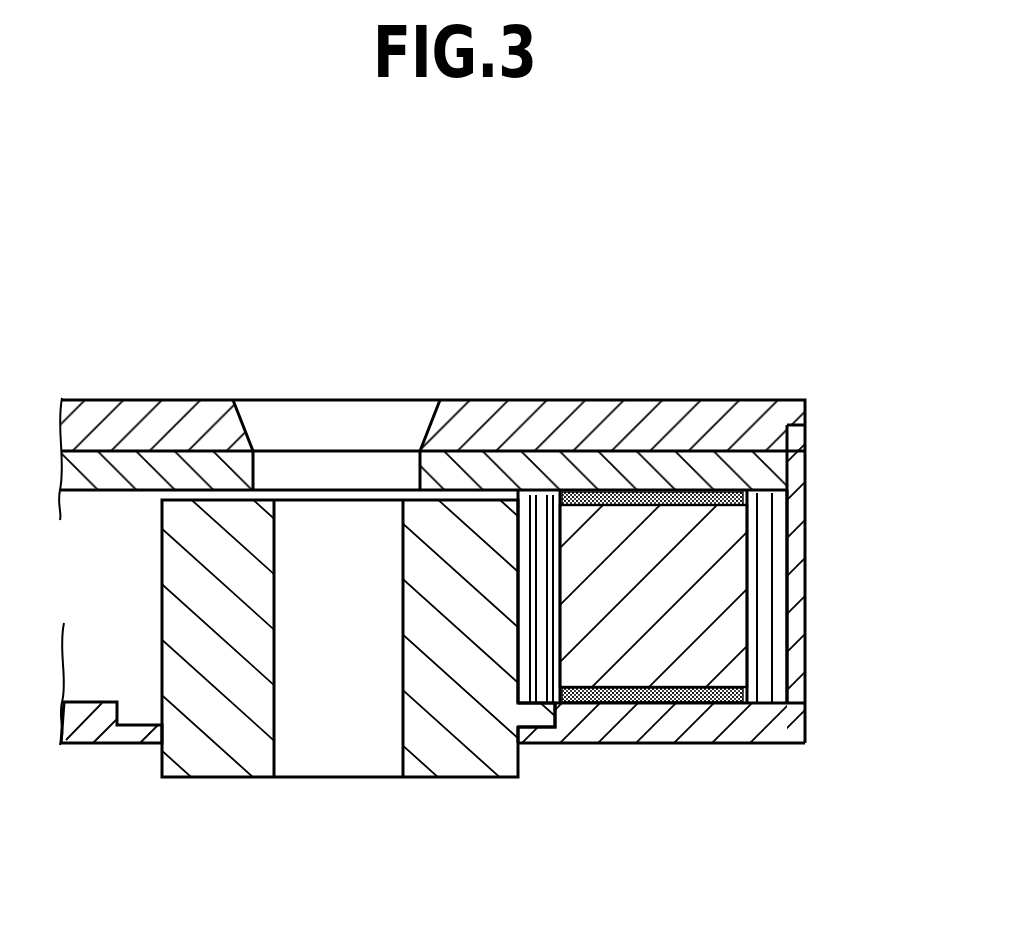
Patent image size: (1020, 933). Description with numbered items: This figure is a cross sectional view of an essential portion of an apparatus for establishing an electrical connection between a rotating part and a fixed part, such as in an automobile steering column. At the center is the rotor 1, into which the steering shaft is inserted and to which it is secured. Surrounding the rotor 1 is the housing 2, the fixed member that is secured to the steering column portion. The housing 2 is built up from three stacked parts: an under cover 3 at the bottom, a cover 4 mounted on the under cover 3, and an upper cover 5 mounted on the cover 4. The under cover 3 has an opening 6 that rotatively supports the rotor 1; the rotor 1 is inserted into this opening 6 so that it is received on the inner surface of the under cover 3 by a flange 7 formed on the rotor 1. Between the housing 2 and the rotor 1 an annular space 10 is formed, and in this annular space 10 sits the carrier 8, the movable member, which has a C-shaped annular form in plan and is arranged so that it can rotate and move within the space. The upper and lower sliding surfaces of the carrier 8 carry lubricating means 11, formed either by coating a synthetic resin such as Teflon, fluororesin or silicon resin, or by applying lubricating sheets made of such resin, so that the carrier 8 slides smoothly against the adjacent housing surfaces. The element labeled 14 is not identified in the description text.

The rotor 1 is at (446, 762).
The housing 2 is at (812, 536).
The under cover 3 is at (628, 723).
The cover 4 is at (792, 472).
The upper cover 5 is at (138, 410).
The opening 6 is at (498, 742).
The flange 7 is at (138, 717).
The carrier 8 is at (735, 621).
The annular space 10 is at (552, 500).
The lubricating means 11 is at (716, 492).
The bobbin 14 is at (530, 505).